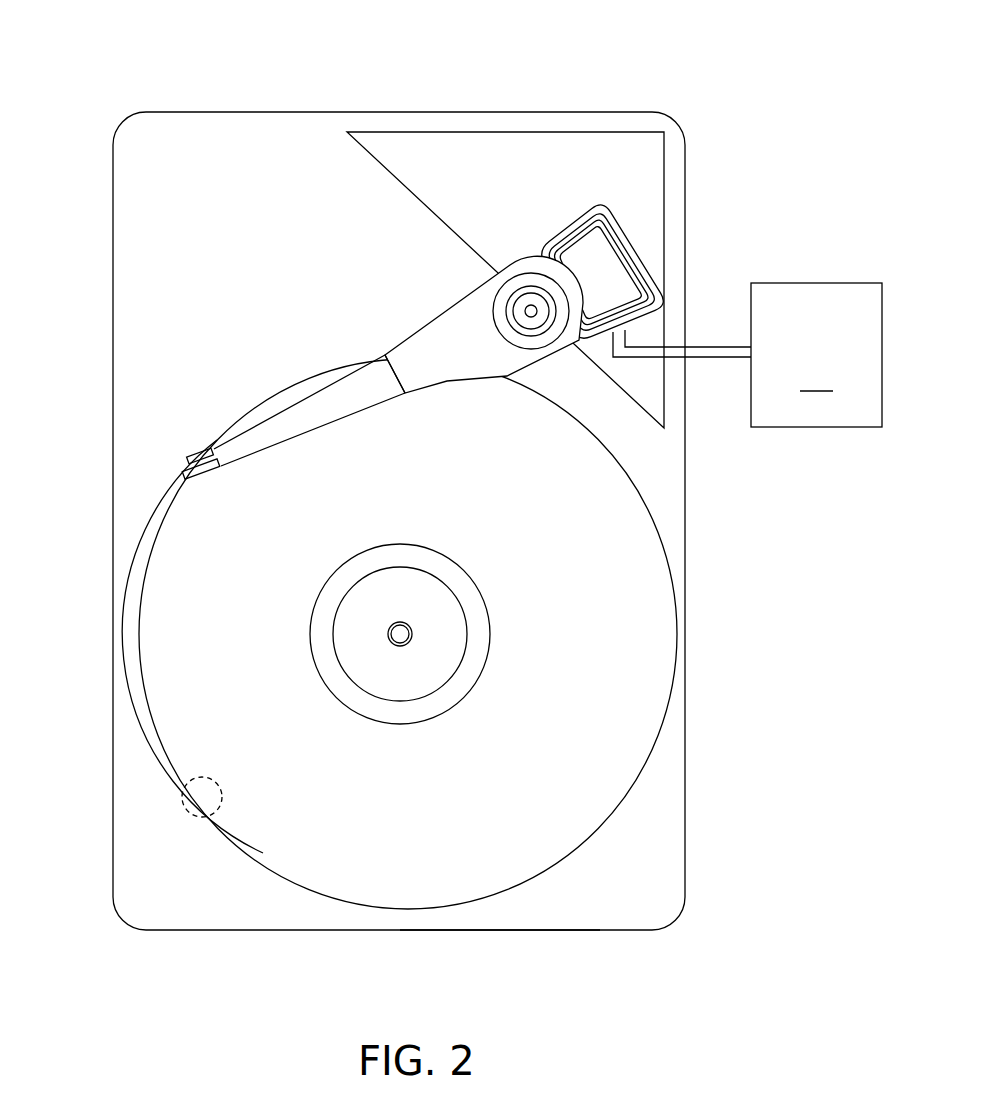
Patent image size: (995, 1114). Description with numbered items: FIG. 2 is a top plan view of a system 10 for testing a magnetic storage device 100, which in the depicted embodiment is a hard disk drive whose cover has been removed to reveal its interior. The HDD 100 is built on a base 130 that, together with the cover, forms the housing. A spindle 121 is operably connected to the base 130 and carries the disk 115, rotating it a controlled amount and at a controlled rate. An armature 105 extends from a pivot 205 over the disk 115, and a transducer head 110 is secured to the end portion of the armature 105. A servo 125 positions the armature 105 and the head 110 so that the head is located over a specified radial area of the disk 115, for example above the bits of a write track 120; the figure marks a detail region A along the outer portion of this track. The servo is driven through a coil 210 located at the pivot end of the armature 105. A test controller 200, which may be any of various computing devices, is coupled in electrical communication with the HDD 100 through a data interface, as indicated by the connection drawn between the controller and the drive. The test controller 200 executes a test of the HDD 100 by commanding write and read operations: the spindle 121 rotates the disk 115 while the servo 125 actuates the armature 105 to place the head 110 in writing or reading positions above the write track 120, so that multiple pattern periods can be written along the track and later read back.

The system 10 is at (705, 74).
The magnetic storage device 100 is at (88, 70).
The armature 105 is at (350, 386).
The transducer head 110 is at (190, 462).
The disk 115 is at (603, 826).
The write track 120 is at (140, 623).
The spindle 121 is at (436, 594).
The servo 125 is at (606, 130).
The base 130 is at (545, 931).
The test controller 200 is at (747, 355).
The pivot bearing 205 is at (517, 300).
The track write module 210 is at (575, 238).
The detail region A is at (185, 783).